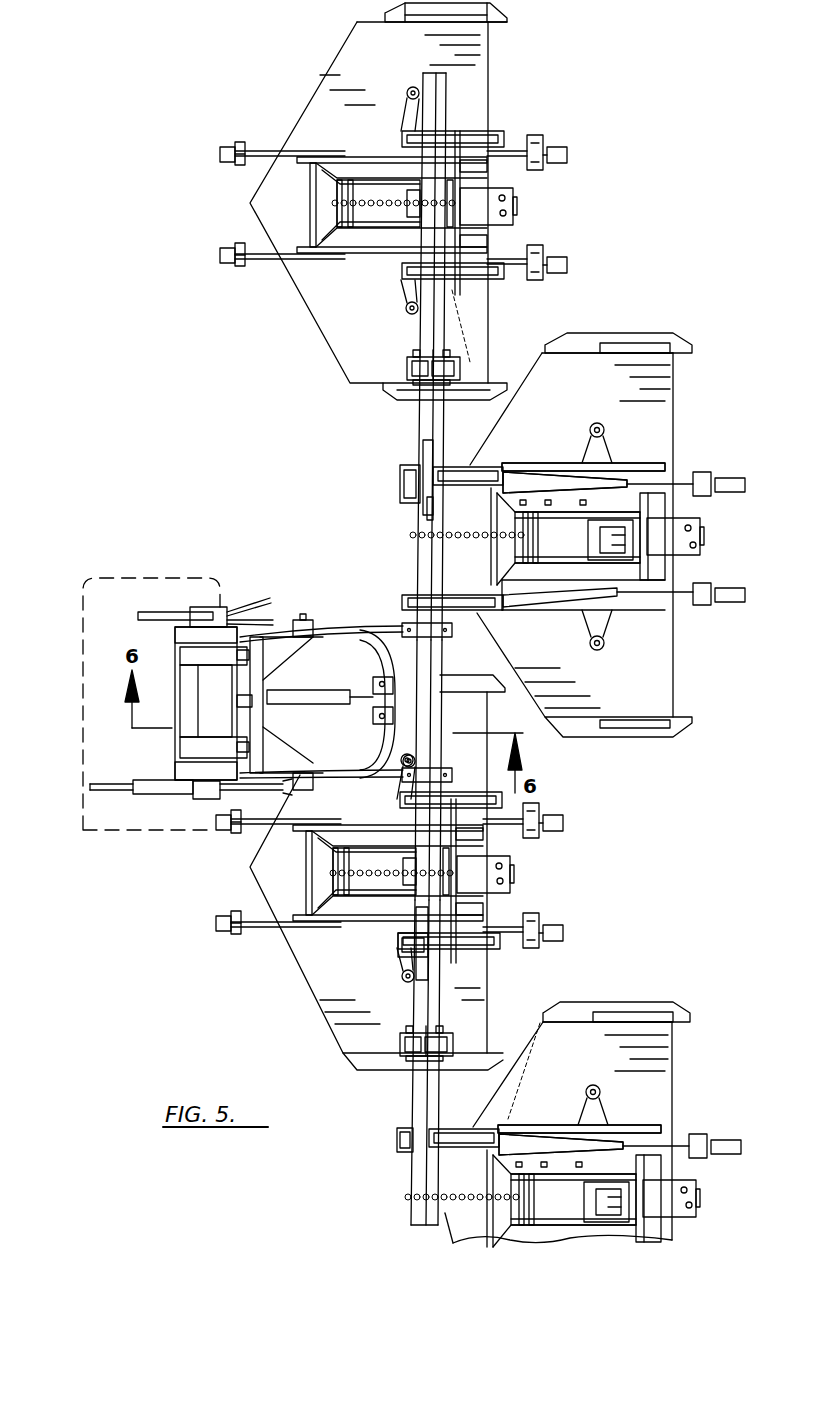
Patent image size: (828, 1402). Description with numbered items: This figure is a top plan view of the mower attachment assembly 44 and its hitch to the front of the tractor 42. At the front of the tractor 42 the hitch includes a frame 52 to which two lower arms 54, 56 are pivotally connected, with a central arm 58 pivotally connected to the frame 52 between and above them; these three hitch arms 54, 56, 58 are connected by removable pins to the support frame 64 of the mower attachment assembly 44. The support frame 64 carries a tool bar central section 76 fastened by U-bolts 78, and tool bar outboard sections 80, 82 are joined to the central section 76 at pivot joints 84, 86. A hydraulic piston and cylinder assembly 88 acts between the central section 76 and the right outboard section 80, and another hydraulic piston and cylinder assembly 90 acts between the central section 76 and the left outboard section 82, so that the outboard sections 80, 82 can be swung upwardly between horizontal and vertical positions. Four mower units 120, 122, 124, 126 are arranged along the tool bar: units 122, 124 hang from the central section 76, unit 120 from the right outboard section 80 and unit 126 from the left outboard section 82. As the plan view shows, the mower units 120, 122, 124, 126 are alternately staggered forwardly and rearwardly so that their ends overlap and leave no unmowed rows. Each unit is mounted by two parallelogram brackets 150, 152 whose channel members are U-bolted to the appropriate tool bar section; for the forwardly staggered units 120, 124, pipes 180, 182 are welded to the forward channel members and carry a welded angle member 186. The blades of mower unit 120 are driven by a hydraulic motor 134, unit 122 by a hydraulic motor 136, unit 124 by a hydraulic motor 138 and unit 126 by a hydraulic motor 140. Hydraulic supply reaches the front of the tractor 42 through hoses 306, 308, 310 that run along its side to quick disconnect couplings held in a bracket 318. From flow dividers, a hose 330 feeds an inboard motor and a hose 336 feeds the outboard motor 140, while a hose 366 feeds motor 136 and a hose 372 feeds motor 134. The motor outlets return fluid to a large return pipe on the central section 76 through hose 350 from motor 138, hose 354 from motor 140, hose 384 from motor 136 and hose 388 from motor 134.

The mower attachment assembly 44 is at (660, 250).
The tractor 42 is at (128, 568).
The frame 52 is at (177, 770).
The lower arm 54 is at (315, 779).
The lower arm 56 is at (328, 625).
The central arm 58 is at (310, 692).
The support frame 64 is at (372, 660).
The tool bar central section 76 is at (438, 713).
The U-bolts 78 is at (452, 637).
The tool bar outboard section 80 is at (415, 1093).
The tool bar outboard section 82 is at (440, 110).
The pivot joint 84 is at (395, 1043).
The pivot joint 86 is at (400, 366).
The hydraulic piston and cylinder assembly 88 is at (424, 952).
The hydraulic piston and cylinder assembly 90 is at (418, 452).
The mower unit 120 is at (620, 1005).
The mower unit 122 is at (310, 997).
The mower unit 124 is at (625, 330).
The mower unit 126 is at (300, 105).
The hydraulic motor 134 is at (680, 1217).
The hydraulic motor 136 is at (512, 866).
The hydraulic motor 138 is at (700, 530).
The hydraulic motor 140 is at (506, 195).
The parallelogram bracket 150 is at (400, 600).
The parallelogram bracket 152 is at (507, 130).
The pipe 180 is at (540, 611).
The pipe 182 is at (533, 470).
The angle member 186 is at (618, 468).
The hose 306 is at (135, 796).
The hose 308 is at (92, 792).
The hose 310 is at (160, 796).
The bracket 318 is at (207, 800).
The hose 330 is at (697, 548).
The hose 336 is at (507, 215).
The hose 350 is at (692, 527).
The hose 354 is at (506, 200).
The hose 366 is at (505, 885).
The hose 372 is at (697, 1204).
The hose 384 is at (505, 862).
The hose 388 is at (689, 1188).